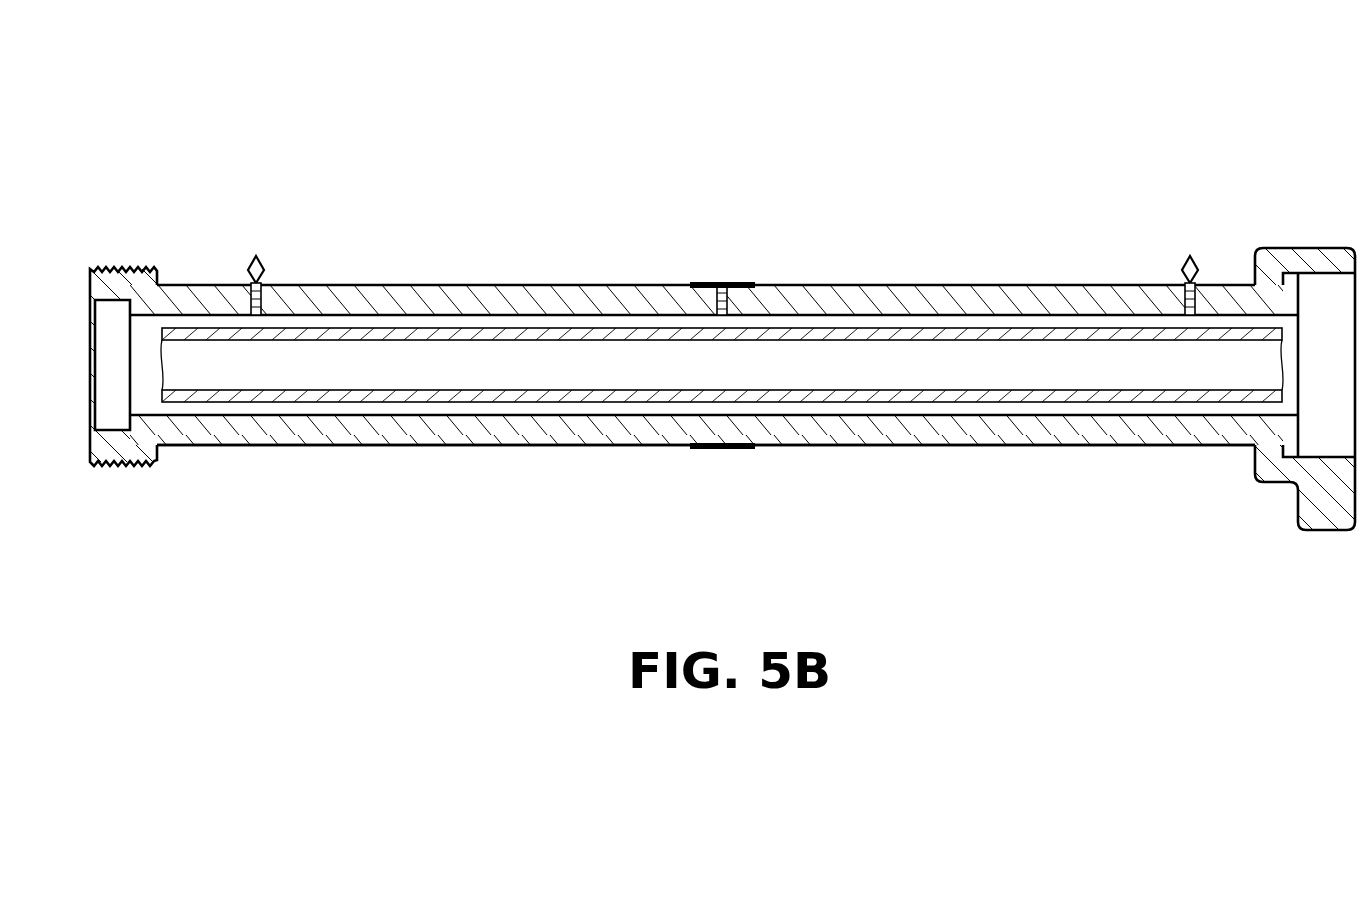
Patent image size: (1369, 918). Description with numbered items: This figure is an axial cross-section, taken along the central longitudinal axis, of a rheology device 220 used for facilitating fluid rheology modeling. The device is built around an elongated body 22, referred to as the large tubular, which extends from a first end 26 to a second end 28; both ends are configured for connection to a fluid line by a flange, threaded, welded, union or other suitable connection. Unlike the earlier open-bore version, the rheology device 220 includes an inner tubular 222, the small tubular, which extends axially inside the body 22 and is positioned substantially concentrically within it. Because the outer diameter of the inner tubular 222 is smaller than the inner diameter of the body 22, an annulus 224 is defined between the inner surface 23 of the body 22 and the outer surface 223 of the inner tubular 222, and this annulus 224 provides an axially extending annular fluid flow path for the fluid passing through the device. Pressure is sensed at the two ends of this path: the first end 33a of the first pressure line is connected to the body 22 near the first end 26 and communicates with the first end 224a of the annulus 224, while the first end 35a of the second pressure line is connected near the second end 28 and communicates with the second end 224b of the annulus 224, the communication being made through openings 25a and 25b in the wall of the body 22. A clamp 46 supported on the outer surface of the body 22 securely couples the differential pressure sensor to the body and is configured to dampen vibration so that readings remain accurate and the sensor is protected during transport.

The rheology device 220 is at (403, 178).
The annulus 224 is at (413, 407).
The first end of the annulus 224a is at (189, 312).
The second end of the annulus 224b is at (1247, 418).
The elongated body 22 is at (660, 446).
The inner tubular 222 is at (708, 392).
The outer surface of the inner tubular 223 is at (917, 333).
The inner surface 23 is at (968, 412).
The opening 25a is at (257, 328).
The opening 25b is at (1190, 328).
The first end of the first pressure line 33a is at (252, 260).
The first end of the second pressure line 35a is at (1195, 261).
The clamp 46 is at (713, 283).
The first end 26 is at (122, 458).
The second end 28 is at (1325, 515).